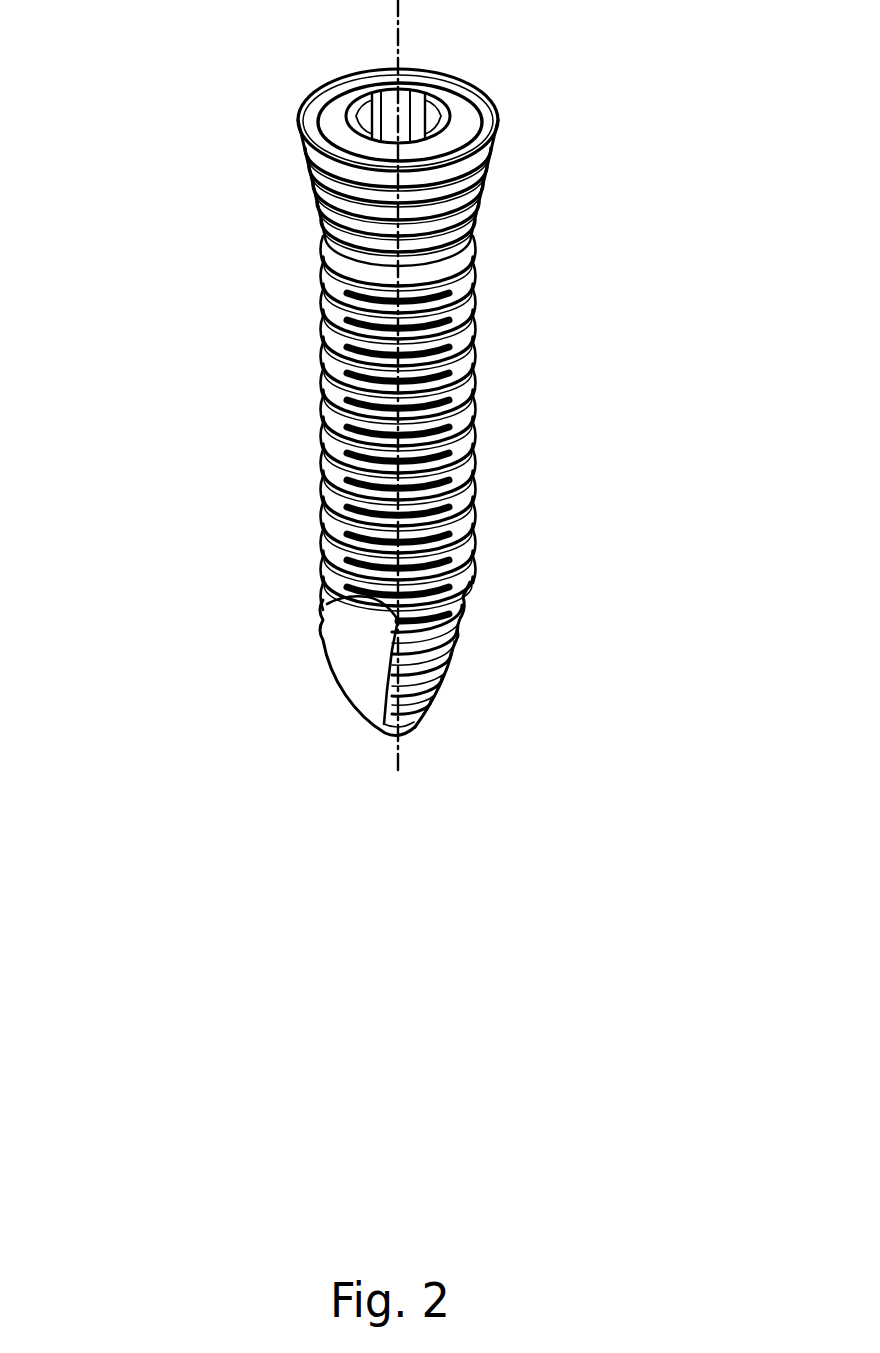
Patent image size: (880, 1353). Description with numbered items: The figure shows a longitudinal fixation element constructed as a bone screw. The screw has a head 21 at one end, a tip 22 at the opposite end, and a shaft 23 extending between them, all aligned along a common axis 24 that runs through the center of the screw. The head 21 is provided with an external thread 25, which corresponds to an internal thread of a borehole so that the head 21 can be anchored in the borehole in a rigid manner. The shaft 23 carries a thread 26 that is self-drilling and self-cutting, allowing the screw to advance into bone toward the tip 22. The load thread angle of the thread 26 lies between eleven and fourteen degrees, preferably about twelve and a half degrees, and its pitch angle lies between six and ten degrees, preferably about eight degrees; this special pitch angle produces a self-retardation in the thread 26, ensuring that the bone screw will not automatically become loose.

The head 21 is at (470, 190).
The tip 22 is at (413, 713).
The shaft 23 is at (428, 521).
The axis 24 is at (398, 24).
The external thread 25 is at (395, 413).
The thread 26 is at (470, 368).